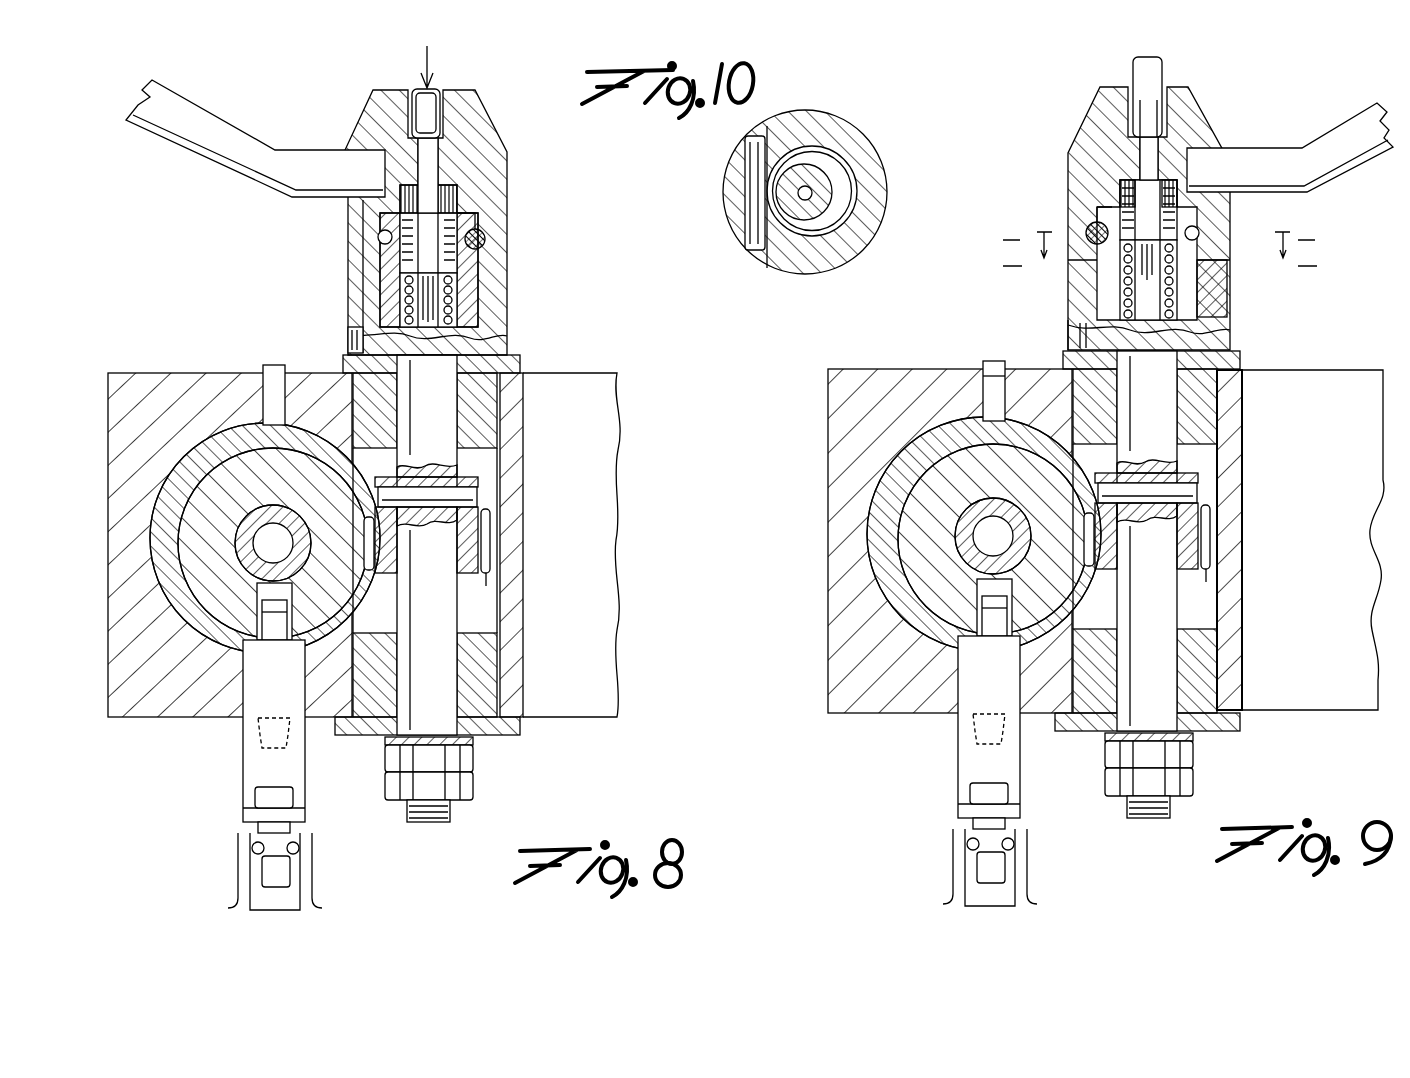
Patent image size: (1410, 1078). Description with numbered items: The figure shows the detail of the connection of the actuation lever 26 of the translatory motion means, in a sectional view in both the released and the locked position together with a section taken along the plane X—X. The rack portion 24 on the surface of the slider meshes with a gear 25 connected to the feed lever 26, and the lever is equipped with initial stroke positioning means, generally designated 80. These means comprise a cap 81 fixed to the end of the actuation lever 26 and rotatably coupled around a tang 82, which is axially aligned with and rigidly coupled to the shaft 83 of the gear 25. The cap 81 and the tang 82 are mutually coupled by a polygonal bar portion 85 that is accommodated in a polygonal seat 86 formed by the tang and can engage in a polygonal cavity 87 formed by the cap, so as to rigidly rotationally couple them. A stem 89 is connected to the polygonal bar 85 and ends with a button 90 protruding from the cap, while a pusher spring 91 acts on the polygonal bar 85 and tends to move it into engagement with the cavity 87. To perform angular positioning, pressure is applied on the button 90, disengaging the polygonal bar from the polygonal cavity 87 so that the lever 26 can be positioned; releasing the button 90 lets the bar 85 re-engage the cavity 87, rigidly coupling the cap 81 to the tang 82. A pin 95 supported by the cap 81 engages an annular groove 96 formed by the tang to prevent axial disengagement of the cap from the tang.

In FIG. 8, the rack portion 24 is at (370, 505).
In FIG. 9, the rack portion 24 is at (1020, 688).
In FIG. 8, the gear 25 is at (487, 550).
In FIG. 9, the gear 25 is at (1259, 543).
In FIG. 8, the actuation lever 26 is at (232, 135).
In FIG. 9, the actuation lever 26 is at (1368, 133).
In FIG. 8, the initial stroke positioning means 80 is at (443, 199).
In FIG. 9, the initial stroke positioning means 80 is at (1151, 196).
In FIG. 8, the cap 81 is at (497, 153).
In FIG. 9, the cap 81 is at (1198, 132).
In FIG. 10, the cap 81 is at (833, 123).
In FIG. 8, the tang 82 is at (467, 282).
In FIG. 9, the tang 82 is at (1222, 282).
In FIG. 8, the shaft 83 is at (437, 430).
In FIG. 9, the shaft 83 is at (1212, 541).
In FIG. 8, the polygonal bar portion 85 is at (378, 267).
In FIG. 9, the polygonal bar portion 85 is at (1148, 210).
In FIG. 10, the polygonal bar portion 85 is at (750, 203).
In FIG. 8, the polygonal seat 86 is at (427, 303).
In FIG. 9, the polygonal seat 86 is at (1145, 272).
In FIG. 8, the polygonal cavity 87 is at (453, 195).
In FIG. 9, the polygonal cavity 87 is at (1070, 152).
In FIG. 8, the stem 89 is at (430, 157).
In FIG. 9, the stem 89 is at (1150, 120).
In FIG. 8, the button 90 is at (430, 95).
In FIG. 9, the button 90 is at (1153, 65).
In FIG. 8, the pusher spring 91 is at (357, 307).
In FIG. 9, the pusher spring 91 is at (1173, 302).
In FIG. 8, the pin 95 is at (477, 240).
In FIG. 9, the pin 95 is at (1097, 227).
In FIG. 8, the annular groove 96 is at (390, 230).
In FIG. 9, the annular groove 96 is at (1193, 227).
In FIG. 10, the annular groove 96 is at (817, 240).